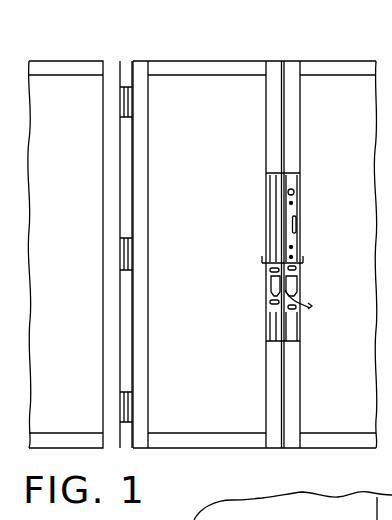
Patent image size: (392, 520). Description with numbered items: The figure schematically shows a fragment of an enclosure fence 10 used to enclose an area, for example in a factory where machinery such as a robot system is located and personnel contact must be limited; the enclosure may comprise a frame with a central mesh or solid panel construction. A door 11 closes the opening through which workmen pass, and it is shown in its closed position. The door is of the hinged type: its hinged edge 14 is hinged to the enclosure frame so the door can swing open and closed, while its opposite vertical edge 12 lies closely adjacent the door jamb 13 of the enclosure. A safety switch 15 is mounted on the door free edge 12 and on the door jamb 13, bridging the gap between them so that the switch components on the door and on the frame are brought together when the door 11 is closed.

The enclosure fence 10 is at (323, 103).
The door 11 is at (208, 102).
The door vertical edge 12 is at (265, 382).
The door jamb 13 is at (300, 380).
The hinged edge 14 is at (133, 312).
The safety switch 15 is at (243, 290).